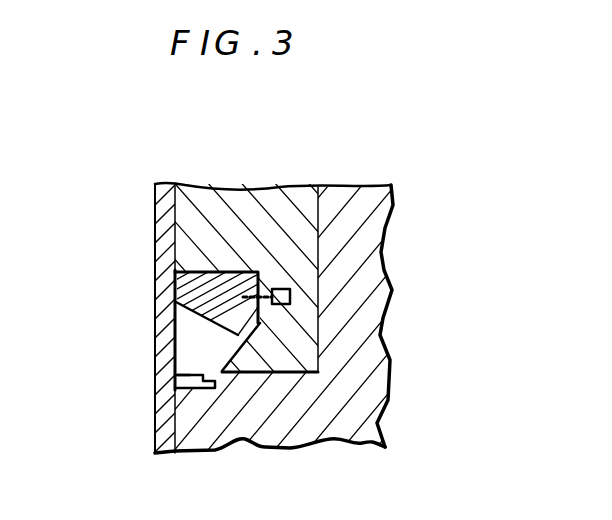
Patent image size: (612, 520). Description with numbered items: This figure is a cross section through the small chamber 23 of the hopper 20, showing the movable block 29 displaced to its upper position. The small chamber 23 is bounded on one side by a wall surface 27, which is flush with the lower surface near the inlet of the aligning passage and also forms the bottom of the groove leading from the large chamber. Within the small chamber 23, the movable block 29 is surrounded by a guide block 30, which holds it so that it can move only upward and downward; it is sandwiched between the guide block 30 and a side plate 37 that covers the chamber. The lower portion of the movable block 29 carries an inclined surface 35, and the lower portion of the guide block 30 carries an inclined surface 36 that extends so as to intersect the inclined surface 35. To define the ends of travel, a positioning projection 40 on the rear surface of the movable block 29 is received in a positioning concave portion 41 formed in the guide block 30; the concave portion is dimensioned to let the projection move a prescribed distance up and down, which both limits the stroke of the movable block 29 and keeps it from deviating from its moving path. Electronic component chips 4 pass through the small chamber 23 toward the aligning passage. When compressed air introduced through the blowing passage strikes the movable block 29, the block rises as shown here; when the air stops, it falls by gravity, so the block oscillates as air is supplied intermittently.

The hopper 20 is at (412, 178).
The guide block 30 is at (262, 183).
The side plate 37 is at (152, 188).
The movable block 29 is at (172, 286).
The inclined surface 35 is at (225, 334).
The inclined surface 36 is at (230, 356).
The small chamber 23 is at (186, 360).
The wall surface 27 is at (177, 375).
The electronic component chip 4 is at (200, 388).
The positioning projection 40 is at (273, 300).
The positioning concave portion 41 is at (290, 296).